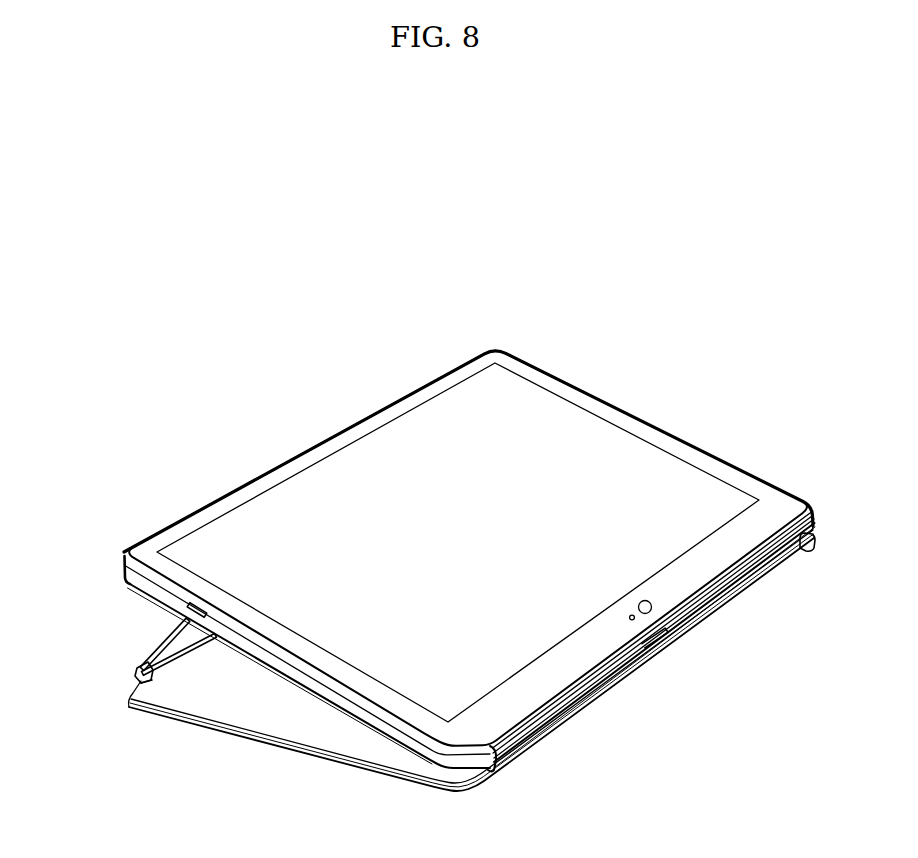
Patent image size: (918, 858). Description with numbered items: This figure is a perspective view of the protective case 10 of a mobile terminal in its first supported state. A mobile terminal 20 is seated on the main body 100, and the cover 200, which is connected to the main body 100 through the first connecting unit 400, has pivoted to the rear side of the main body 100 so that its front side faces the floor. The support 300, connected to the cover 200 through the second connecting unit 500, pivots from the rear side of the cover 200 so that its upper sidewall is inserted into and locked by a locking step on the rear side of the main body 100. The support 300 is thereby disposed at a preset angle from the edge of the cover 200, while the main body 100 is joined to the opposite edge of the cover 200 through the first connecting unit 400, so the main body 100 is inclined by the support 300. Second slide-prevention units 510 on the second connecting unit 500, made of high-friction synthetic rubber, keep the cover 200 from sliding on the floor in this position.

The protective case 10 is at (436, 676).
The mobile terminal 20 is at (557, 427).
The main body 100 is at (116, 590).
The cover 200 is at (360, 748).
The support 300 is at (183, 637).
The first connecting unit 400 is at (505, 768).
The second connecting unit 500 is at (135, 672).
The second slide-prevention unit 510 is at (168, 672).